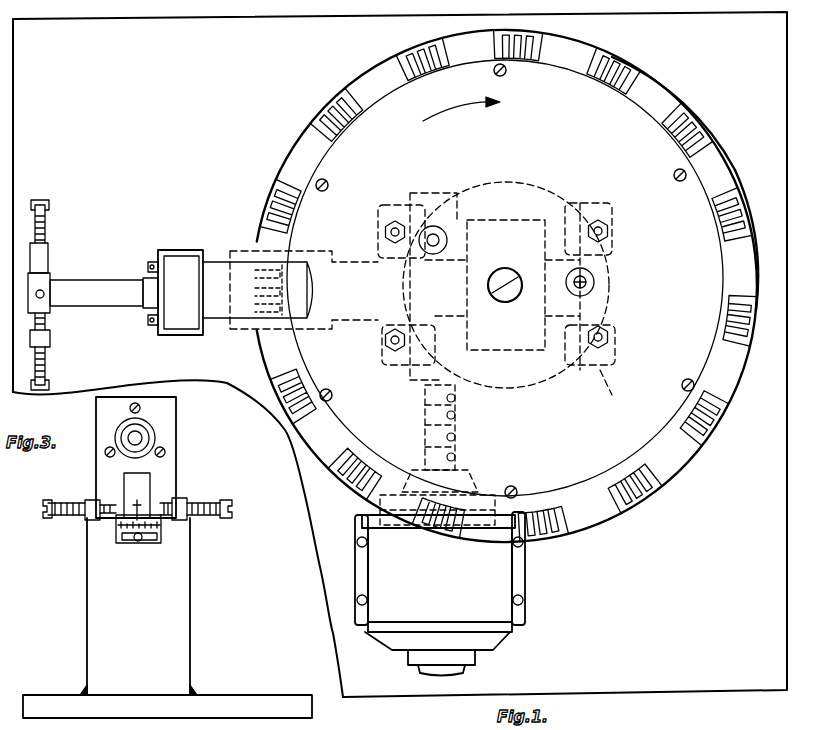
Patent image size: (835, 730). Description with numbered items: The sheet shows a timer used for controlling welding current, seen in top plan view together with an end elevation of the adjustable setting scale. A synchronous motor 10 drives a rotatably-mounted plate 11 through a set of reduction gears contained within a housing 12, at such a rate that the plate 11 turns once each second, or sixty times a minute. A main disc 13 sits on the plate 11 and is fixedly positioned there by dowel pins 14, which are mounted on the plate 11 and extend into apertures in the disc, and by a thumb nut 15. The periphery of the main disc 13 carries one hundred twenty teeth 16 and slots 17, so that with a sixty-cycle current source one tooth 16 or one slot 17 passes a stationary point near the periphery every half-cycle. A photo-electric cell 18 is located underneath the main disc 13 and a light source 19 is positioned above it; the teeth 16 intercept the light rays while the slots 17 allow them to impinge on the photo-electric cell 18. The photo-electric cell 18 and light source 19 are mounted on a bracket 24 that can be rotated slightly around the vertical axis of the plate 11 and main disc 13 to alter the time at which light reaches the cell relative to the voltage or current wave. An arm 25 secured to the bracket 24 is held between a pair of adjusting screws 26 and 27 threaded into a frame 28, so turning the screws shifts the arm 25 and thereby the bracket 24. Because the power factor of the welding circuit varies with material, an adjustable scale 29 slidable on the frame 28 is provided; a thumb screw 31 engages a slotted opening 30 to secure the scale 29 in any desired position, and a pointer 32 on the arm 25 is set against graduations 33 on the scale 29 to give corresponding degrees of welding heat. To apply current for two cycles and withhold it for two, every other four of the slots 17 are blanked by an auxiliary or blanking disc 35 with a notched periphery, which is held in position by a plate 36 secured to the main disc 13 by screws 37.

In FIG. 1, the synchronous motor 10 is at (552, 642).
In FIG. 1, the rotatably-mounted plate 11 is at (557, 352).
In FIG. 1, the housing 12 is at (427, 289).
In FIG. 1, the main disc 13 is at (750, 436).
In FIG. 1, the dowel pins 14 is at (433, 230).
In FIG. 1, the thumb nut 15 is at (508, 272).
In FIG. 1, the teeth 16 is at (630, 66).
In FIG. 1, the slots 17 is at (698, 132).
In FIG. 3, the photo-electric cell 18 is at (175, 712).
In FIG. 1, the light source 19 is at (302, 292).
In FIG. 1, the bracket 24 is at (163, 250).
In FIG. 3, the bracket 24 is at (177, 460).
In FIG. 1, the arm 25 is at (96, 282).
In FIG. 3, the arm 25 is at (124, 482).
In FIG. 1, the adjusting screw 26 is at (47, 222).
In FIG. 3, the adjusting screw 26 is at (60, 503).
In FIG. 1, the adjusting screw 27 is at (50, 360).
In FIG. 3, the adjusting screw 27 is at (204, 503).
In FIG. 1, the frame 28 is at (48, 254).
In FIG. 3, the frame 28 is at (191, 594).
In FIG. 3, the adjustable scale 29 is at (161, 530).
In FIG. 3, the slotted opening 30 is at (157, 540).
In FIG. 3, the thumb screw 31 is at (142, 541).
In FIG. 3, the pointer 32 is at (145, 495).
In FIG. 3, the graduations 33 is at (117, 524).
In FIG. 1, the auxiliary or blanking disc 35 is at (722, 172).
In FIG. 1, the plate 36 is at (705, 278).
In FIG. 1, the screws 37 is at (688, 378).